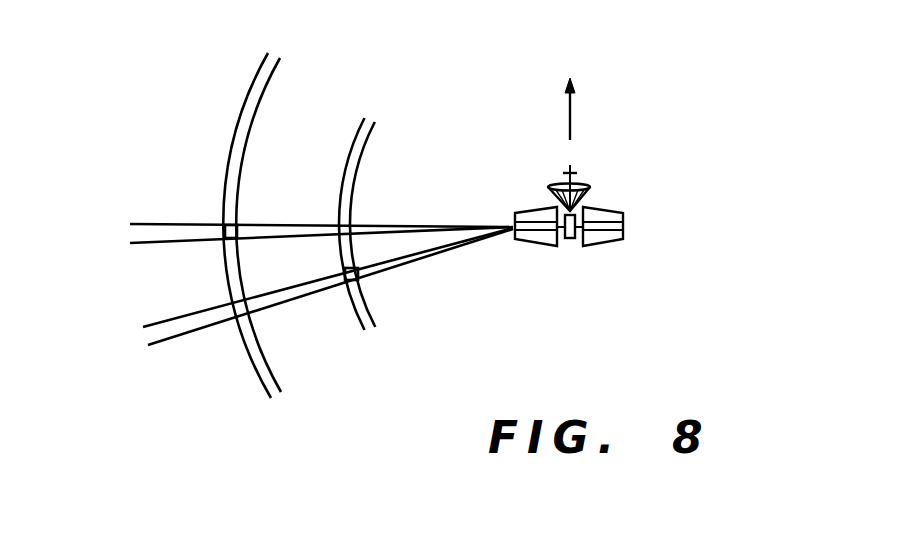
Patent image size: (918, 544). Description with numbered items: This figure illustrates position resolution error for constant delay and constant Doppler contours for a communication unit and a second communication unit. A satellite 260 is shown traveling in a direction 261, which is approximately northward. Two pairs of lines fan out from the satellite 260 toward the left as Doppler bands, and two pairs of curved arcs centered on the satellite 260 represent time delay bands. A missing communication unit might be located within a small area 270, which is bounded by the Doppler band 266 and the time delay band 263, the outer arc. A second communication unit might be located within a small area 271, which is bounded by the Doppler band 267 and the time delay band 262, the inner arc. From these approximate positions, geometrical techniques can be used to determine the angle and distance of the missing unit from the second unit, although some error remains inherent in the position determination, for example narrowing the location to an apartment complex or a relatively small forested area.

The satellite 260 is at (570, 248).
The direction 261 is at (570, 114).
The time delay band 262 is at (358, 318).
The time delay band 263 is at (264, 384).
The Doppler band 266 is at (160, 243).
The Doppler band 267 is at (182, 335).
The area 270 is at (225, 225).
The area 271 is at (359, 277).